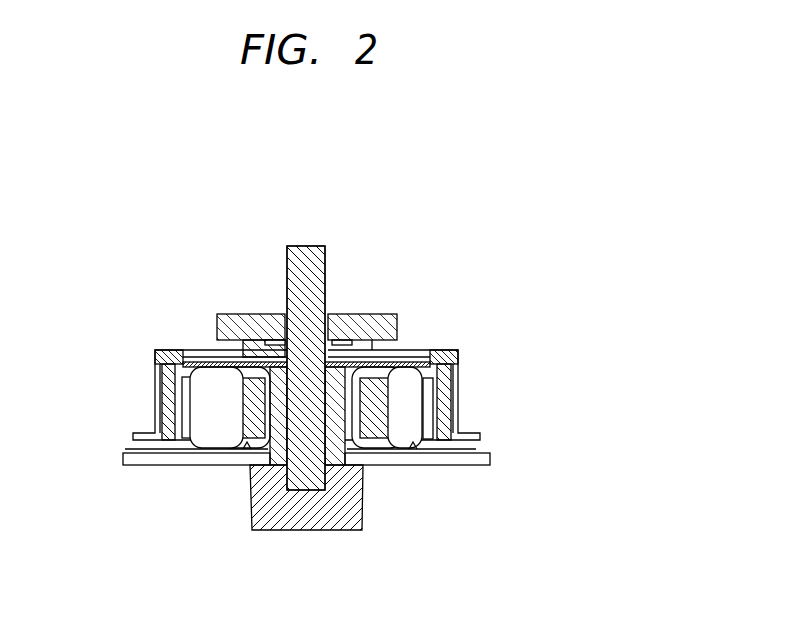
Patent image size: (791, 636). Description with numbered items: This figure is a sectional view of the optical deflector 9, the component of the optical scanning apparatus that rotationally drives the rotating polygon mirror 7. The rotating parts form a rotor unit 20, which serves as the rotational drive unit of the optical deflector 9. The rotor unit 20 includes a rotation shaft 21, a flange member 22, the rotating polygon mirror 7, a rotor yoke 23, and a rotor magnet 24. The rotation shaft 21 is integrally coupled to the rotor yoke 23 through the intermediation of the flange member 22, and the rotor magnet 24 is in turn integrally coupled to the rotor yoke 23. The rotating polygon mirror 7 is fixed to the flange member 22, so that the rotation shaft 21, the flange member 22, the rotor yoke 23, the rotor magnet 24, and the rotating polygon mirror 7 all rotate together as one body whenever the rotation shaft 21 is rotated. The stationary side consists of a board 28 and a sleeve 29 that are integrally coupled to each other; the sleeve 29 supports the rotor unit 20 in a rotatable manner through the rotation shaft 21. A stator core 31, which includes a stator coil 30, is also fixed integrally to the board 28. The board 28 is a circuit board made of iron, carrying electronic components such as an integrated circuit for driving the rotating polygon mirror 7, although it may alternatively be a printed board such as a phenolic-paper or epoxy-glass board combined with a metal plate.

The rotating polygon mirror 7 is at (227, 352).
The optical deflector 9 is at (383, 293).
The rotor unit 20 is at (17, 138).
The rotation shaft 21 is at (309, 253).
The flange member 22 is at (255, 340).
The rotor yoke 23 is at (170, 357).
The rotor magnet 24 is at (162, 390).
The board 28 is at (165, 459).
The sleeve 29 is at (353, 507).
The stator coil 30 is at (410, 425).
The stator core 31 is at (377, 403).